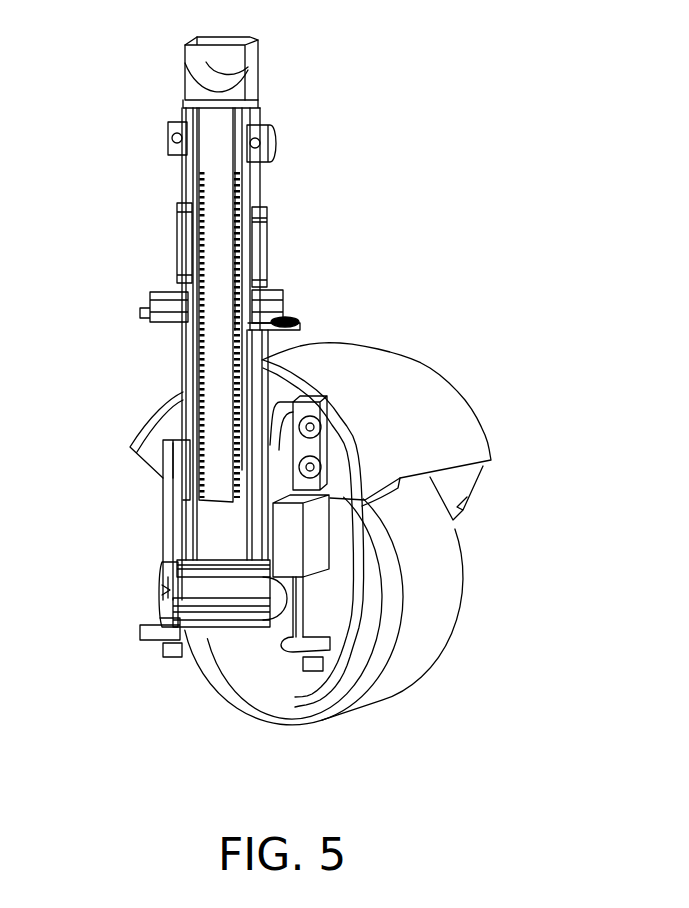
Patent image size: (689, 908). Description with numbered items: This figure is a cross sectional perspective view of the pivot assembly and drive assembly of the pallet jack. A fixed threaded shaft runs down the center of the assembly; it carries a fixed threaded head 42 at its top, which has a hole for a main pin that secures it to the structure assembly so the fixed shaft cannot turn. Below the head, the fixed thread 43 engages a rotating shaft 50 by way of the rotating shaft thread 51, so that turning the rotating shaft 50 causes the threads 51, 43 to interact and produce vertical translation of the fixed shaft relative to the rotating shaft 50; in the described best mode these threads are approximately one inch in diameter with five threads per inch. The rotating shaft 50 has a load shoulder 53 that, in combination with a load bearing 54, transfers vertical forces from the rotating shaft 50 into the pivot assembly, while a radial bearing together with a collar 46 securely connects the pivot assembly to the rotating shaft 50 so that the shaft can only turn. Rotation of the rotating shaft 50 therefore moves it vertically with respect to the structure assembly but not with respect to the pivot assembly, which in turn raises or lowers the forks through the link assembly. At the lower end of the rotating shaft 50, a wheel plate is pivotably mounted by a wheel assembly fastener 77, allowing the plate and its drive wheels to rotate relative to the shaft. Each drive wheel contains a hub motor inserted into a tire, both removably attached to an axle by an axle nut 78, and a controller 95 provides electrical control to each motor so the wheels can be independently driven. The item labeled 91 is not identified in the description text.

The fixed threaded head 42 is at (196, 52).
The fixed thread 43 is at (236, 188).
The collar 46 is at (276, 138).
The rotating shaft thread 51 is at (185, 160).
The collar 91 is at (265, 232).
The load bearing 54 is at (275, 298).
The load shoulder 53 is at (288, 318).
The axle nut 78 is at (152, 310).
The rotating shaft 50 is at (296, 326).
The wheel assembly fastener 77 is at (176, 572).
The controller 95 is at (318, 548).